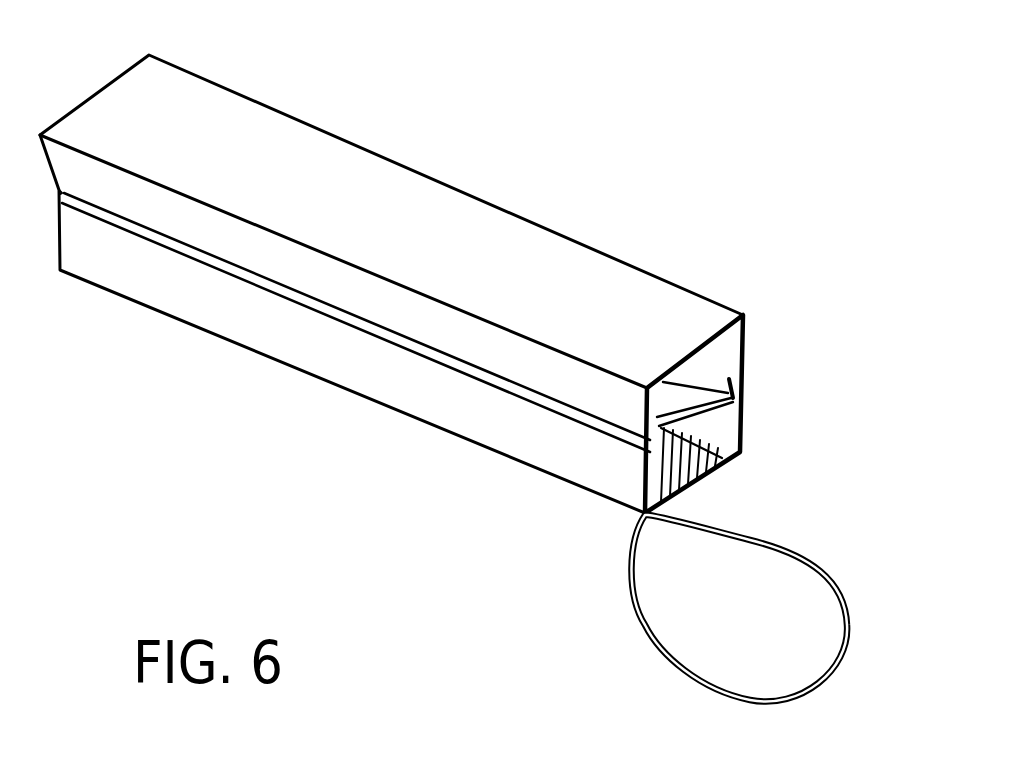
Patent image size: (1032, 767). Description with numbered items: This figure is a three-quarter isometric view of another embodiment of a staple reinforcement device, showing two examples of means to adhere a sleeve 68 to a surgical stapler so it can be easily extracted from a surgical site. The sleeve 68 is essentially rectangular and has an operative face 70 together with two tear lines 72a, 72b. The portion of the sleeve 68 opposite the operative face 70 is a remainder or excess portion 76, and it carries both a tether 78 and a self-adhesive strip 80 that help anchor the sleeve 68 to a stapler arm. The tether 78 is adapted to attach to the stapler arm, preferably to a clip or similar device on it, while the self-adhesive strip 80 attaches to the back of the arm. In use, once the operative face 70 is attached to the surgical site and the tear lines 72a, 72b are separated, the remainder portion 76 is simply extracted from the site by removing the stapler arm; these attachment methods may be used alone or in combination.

The sleeve 68 is at (331, 133).
The operative face 70 is at (440, 240).
The tear line 72a is at (453, 367).
The tear line 72b is at (735, 383).
The remainder portion 76 is at (735, 407).
The tether 78 is at (643, 632).
The self-adhesive strip 80 is at (745, 455).